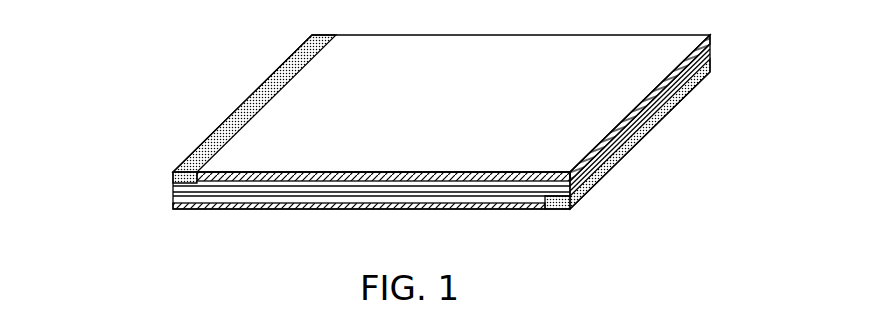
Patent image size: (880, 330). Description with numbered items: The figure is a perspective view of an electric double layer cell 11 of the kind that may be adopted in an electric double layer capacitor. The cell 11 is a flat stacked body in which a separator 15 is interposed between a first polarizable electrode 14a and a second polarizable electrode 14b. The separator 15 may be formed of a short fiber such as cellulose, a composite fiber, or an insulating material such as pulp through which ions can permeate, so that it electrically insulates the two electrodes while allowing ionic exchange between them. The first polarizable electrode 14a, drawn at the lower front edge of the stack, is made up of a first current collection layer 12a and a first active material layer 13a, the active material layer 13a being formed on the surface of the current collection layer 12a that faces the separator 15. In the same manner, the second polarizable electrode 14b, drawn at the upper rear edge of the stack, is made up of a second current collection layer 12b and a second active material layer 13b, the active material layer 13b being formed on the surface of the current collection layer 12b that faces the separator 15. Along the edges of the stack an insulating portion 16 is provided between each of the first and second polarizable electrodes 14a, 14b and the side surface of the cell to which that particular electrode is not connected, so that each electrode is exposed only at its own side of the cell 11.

The electric double layer cell 11 is at (223, 58).
The first current collection layer 12a is at (173, 206).
The second current collection layer 12b is at (712, 37).
The first active material layer 13a is at (173, 198).
The second active material layer 13b is at (712, 41).
The first polarizable electrode 14a is at (298, 201).
The second polarizable electrode 14b is at (530, 96).
The separator 15 is at (645, 128).
The insulating portion 16 is at (224, 127).